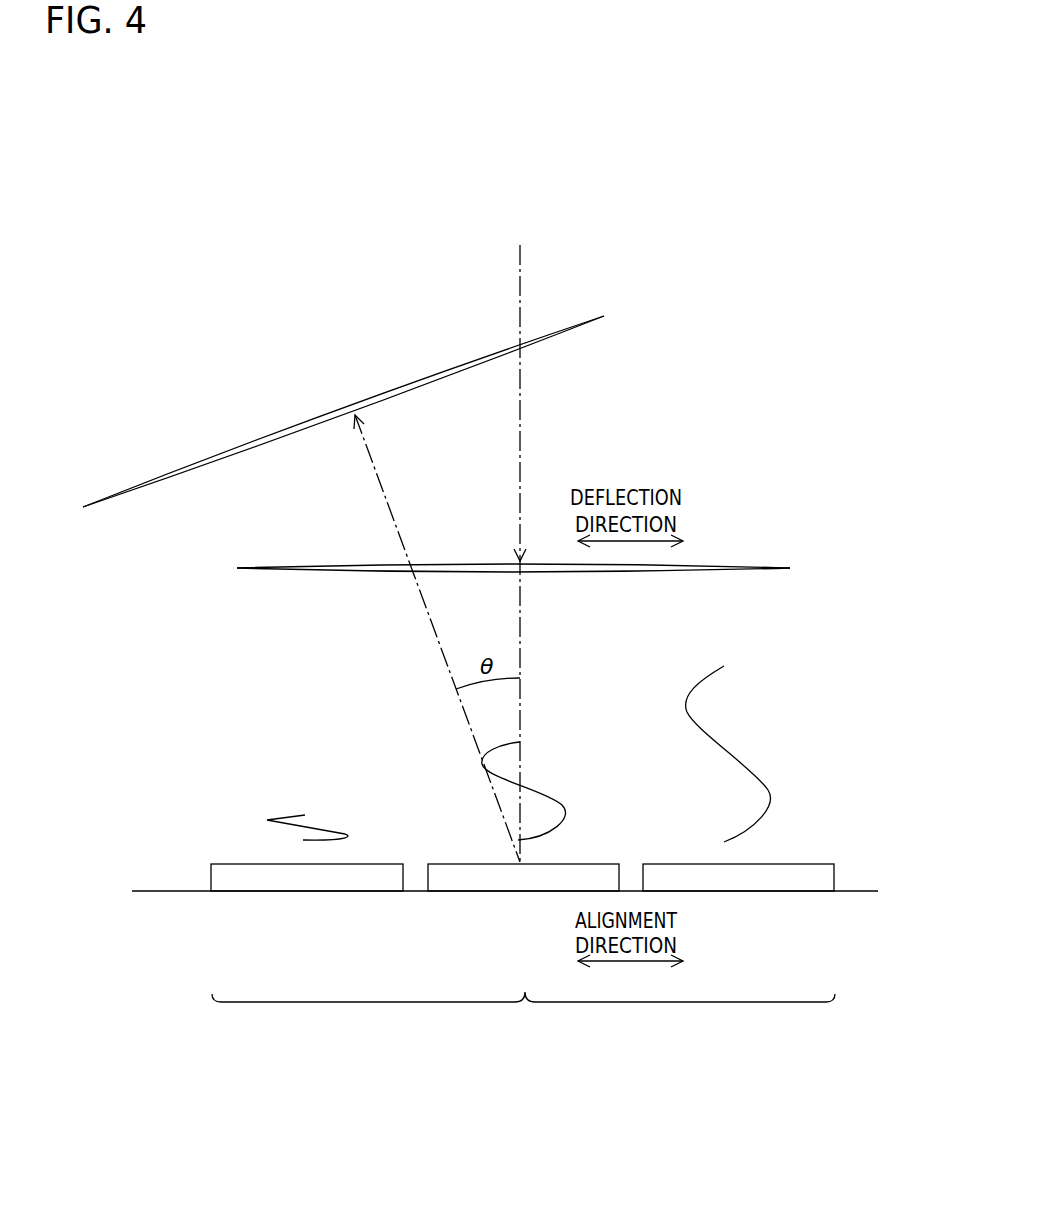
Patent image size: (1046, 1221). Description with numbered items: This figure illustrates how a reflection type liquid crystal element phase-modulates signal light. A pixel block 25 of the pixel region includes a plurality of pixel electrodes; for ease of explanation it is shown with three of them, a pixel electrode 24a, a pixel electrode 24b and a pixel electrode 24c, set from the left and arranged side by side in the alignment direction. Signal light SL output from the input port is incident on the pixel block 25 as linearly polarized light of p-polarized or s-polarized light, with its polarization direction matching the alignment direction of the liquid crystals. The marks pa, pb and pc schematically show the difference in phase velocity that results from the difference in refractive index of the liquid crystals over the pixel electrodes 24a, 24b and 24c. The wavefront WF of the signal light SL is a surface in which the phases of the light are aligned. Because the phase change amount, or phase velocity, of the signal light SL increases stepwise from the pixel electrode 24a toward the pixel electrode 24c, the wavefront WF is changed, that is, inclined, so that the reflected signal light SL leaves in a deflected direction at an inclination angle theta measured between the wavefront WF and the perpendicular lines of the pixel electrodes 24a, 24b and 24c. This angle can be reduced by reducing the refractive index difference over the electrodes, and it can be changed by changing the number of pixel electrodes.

The signal light SL is at (522, 424).
The wavefront WF is at (572, 330).
The phase velocity on pixel electrode 24a pa is at (350, 835).
The phase velocity on pixel electrode 24b pb is at (535, 793).
The phase velocity on pixel electrode 24c pc is at (745, 760).
The pixel electrode 24a is at (305, 882).
The pixel electrode 24b is at (491, 882).
The pixel electrode 24c is at (757, 882).
The pixel block 25 is at (523, 1016).